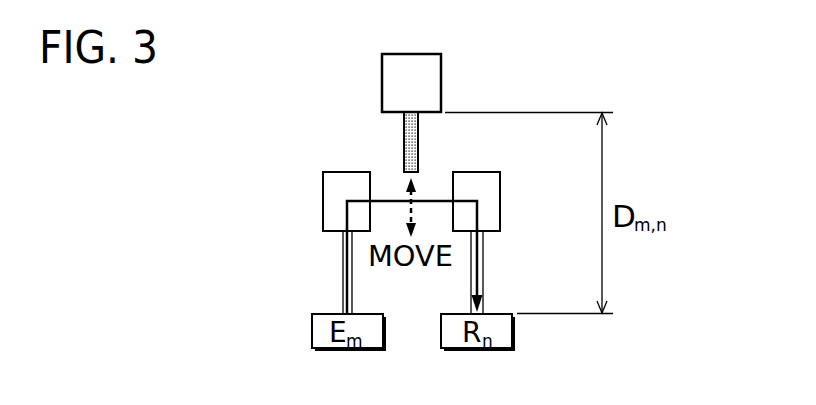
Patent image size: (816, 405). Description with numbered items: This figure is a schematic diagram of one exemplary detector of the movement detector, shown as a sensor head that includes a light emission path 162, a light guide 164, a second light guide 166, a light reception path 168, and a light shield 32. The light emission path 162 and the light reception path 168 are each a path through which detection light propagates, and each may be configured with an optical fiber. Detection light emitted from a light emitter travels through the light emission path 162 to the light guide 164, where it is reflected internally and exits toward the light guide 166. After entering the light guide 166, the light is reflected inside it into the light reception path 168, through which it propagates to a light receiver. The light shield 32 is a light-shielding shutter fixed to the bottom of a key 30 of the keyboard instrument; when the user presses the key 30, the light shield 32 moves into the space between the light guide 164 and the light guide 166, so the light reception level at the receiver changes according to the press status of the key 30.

The key 30 is at (441, 89).
The light shield 32 is at (418, 135).
The light guide 164 is at (323, 201).
The light guide 166 is at (500, 203).
The light emission path 162 is at (343, 272).
The light reception path 168 is at (483, 268).